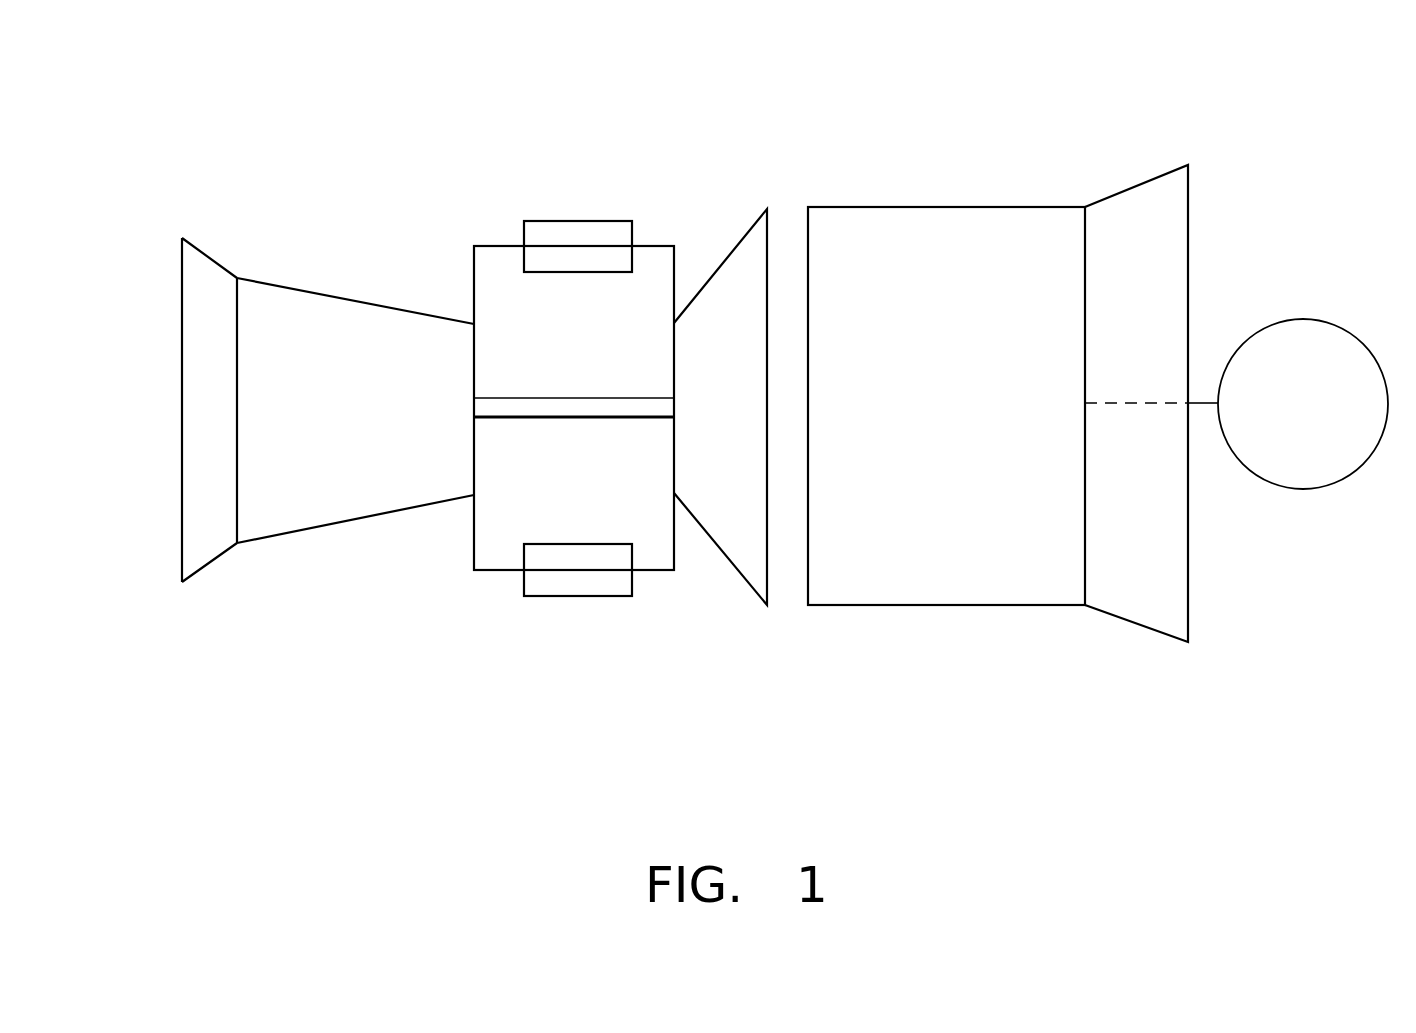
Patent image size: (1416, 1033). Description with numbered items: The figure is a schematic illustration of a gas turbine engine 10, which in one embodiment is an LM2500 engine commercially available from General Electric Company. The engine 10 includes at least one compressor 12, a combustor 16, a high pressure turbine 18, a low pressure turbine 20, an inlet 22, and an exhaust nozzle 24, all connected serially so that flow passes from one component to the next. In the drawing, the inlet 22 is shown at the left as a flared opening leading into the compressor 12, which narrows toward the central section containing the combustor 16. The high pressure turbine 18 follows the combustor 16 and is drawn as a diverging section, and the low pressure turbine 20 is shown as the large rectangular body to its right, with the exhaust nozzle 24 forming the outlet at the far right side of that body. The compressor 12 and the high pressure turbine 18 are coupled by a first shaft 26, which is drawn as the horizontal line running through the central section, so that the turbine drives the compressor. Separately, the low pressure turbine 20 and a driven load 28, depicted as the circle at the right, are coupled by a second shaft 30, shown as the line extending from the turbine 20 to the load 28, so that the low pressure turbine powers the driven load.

The gas turbine engine 10 is at (378, 87).
The compressor 12 is at (308, 300).
The combustor 16 is at (567, 218).
The high pressure turbine 18 is at (735, 245).
The low pressure turbine 20 is at (914, 205).
The inlet 22 is at (210, 567).
The exhaust nozzle 24 is at (1123, 188).
The first shaft 26 is at (598, 408).
The driven load 28 is at (1322, 318).
The second shaft 30 is at (1145, 403).